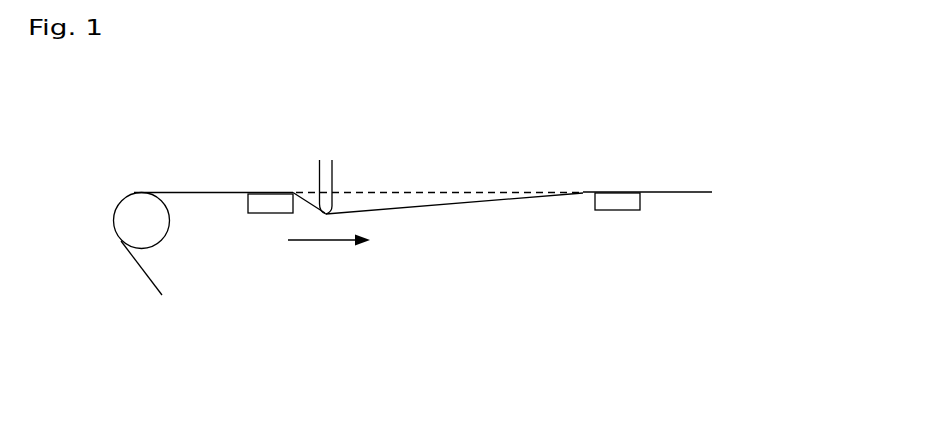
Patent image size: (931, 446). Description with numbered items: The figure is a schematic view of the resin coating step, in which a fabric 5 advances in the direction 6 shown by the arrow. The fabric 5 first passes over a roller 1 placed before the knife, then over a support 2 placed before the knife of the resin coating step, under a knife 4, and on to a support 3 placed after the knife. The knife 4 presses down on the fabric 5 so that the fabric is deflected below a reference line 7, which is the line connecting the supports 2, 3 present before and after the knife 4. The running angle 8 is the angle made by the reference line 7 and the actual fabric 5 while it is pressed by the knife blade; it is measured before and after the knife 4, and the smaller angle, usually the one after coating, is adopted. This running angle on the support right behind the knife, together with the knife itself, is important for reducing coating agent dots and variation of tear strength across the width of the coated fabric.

The roller 1 is at (142, 221).
The support placed before the knife 2 is at (272, 205).
The support placed after the knife 3 is at (623, 200).
The knife 4 is at (334, 177).
The fabric 5 is at (152, 179).
The direction in which a fabric advances 6 is at (329, 264).
The reference line 7 is at (450, 206).
The running angle 8 is at (521, 184).